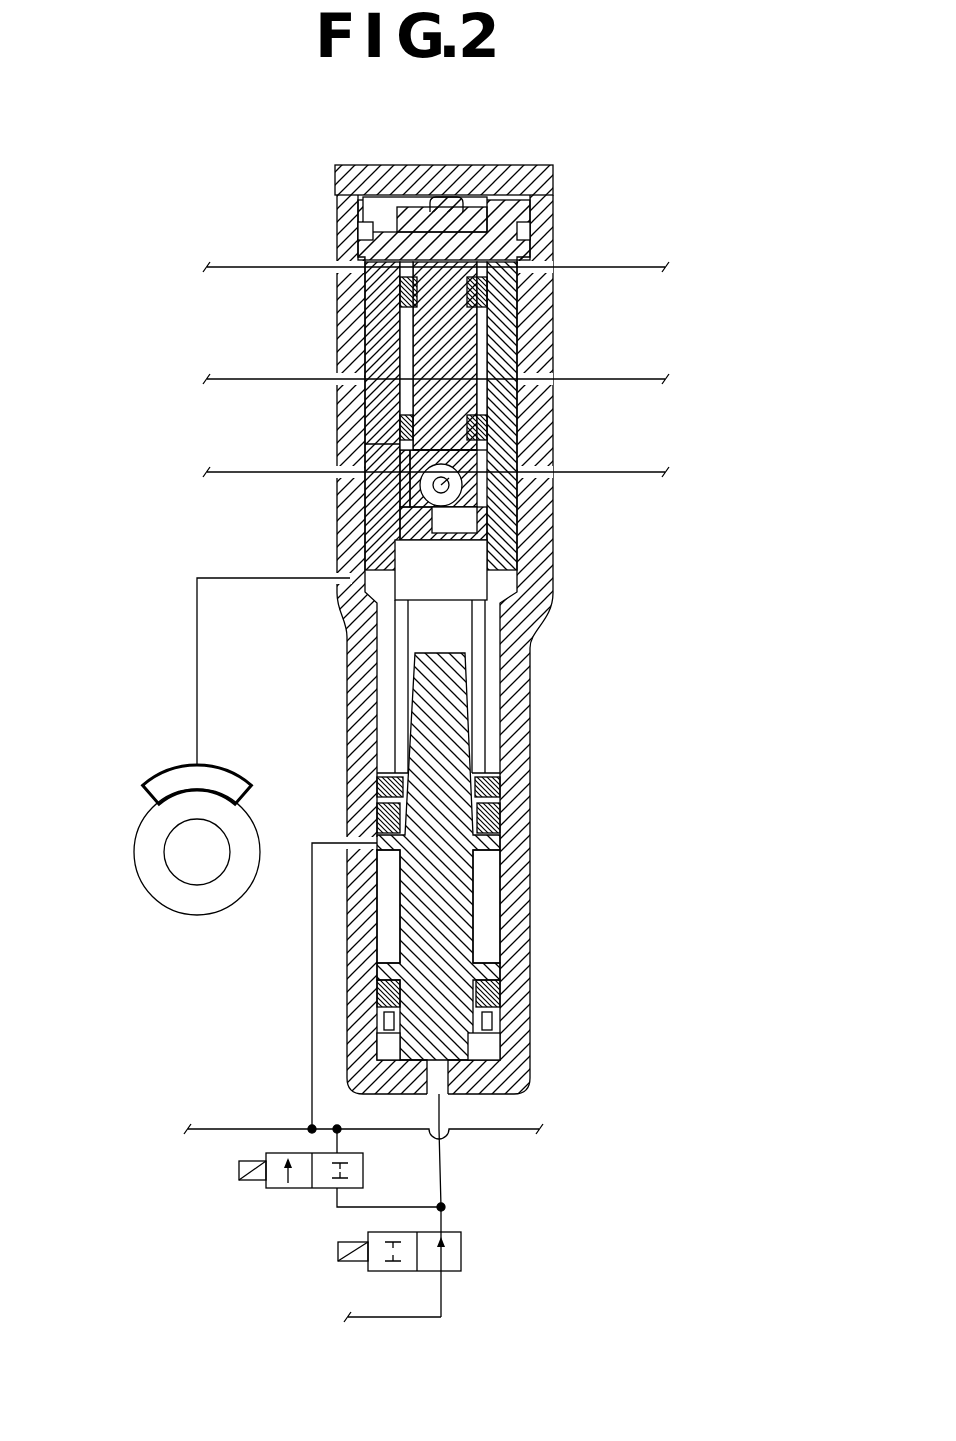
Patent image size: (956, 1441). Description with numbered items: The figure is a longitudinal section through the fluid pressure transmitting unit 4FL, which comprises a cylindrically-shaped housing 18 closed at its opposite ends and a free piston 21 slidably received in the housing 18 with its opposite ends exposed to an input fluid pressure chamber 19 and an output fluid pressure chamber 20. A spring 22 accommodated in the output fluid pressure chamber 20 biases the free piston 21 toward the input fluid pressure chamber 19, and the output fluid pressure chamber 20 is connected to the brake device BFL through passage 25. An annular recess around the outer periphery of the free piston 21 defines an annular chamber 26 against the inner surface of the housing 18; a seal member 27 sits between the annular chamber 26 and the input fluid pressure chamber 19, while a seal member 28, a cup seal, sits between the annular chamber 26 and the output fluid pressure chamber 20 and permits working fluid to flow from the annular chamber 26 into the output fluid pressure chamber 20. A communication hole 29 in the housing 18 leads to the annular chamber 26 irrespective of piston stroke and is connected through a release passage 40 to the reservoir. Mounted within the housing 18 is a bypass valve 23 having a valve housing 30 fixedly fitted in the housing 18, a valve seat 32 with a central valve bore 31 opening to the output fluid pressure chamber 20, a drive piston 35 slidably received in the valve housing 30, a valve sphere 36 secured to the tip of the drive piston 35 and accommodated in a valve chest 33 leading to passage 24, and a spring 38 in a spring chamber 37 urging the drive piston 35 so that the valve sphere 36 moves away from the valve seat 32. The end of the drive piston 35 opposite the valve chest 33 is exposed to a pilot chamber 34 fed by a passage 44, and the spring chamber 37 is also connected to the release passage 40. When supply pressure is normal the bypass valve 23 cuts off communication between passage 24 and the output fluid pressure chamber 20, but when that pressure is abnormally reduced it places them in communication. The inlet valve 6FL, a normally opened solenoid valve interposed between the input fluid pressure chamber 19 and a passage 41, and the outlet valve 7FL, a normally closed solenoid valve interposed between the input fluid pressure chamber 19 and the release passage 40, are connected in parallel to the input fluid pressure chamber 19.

The fluid pressure transmitting unit 4FL is at (239, 549).
The brake device BFL is at (128, 828).
The inlet valve 6FL is at (451, 1232).
The outlet valve 7FL is at (302, 1190).
The housing 18 is at (343, 643).
The input fluid pressure chamber 19 is at (483, 1047).
The output fluid pressure chamber 20 is at (500, 595).
The free piston 21 is at (453, 924).
The spring 22 is at (380, 776).
The bypass valve 23 is at (515, 510).
The passage 24 is at (628, 472).
The passage 25 is at (197, 620).
The annular chamber 26 is at (487, 880).
The seal member 27 is at (530, 968).
The seal member 28 is at (500, 808).
The communication hole 29 is at (350, 818).
The valve housing 30 is at (372, 352).
The valve bore 31 is at (448, 522).
The valve seat 32 is at (395, 505).
The valve chest 33 is at (552, 407).
The pilot chamber 34 is at (401, 282).
The drive piston 35 is at (550, 323).
The valve sphere 36 is at (372, 444).
The spring chamber 37 is at (372, 325).
The spring 38 is at (372, 413).
The release passage 40 is at (635, 378).
The passage 41 is at (397, 1318).
The passage 44 is at (598, 267).